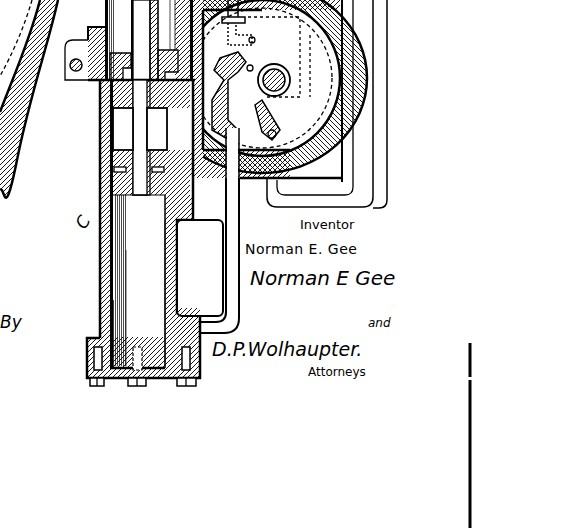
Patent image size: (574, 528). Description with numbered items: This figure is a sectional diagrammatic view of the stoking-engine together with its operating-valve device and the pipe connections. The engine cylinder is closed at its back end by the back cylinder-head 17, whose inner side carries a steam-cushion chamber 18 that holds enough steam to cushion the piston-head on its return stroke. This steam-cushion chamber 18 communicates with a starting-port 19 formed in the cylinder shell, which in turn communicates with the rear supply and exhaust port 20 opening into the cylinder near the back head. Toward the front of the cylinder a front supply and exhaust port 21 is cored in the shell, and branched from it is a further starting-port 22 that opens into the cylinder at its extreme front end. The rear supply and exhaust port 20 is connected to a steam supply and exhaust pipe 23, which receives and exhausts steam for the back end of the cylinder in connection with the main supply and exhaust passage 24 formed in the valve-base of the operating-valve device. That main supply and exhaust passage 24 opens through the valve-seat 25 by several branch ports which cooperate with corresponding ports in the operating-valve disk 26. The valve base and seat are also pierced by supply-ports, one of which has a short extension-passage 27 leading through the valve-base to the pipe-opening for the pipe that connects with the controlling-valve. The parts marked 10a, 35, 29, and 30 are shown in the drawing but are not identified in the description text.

The clamp bolt boss 10a is at (73, 60).
The valve stem bore 35 is at (177, 55).
The starting-port 22 is at (136, 108).
The front supply and exhaust port 21 is at (182, 98).
The back cylinder-head 17 is at (115, 385).
The steam-cushion chamber 18 is at (120, 290).
The starting-port 19 is at (160, 272).
The rear supply and exhaust port 20 is at (140, 332).
The main supply and exhaust passage 24 is at (208, 188).
The valve-seat 25 is at (305, 78).
The operating-valve disk 26 is at (278, 110).
The pawl 30 is at (256, 62).
The lever 29 is at (228, 54).
The extension-passage 27 is at (266, 165).
The steam supply and exhaust pipe 23 is at (241, 283).